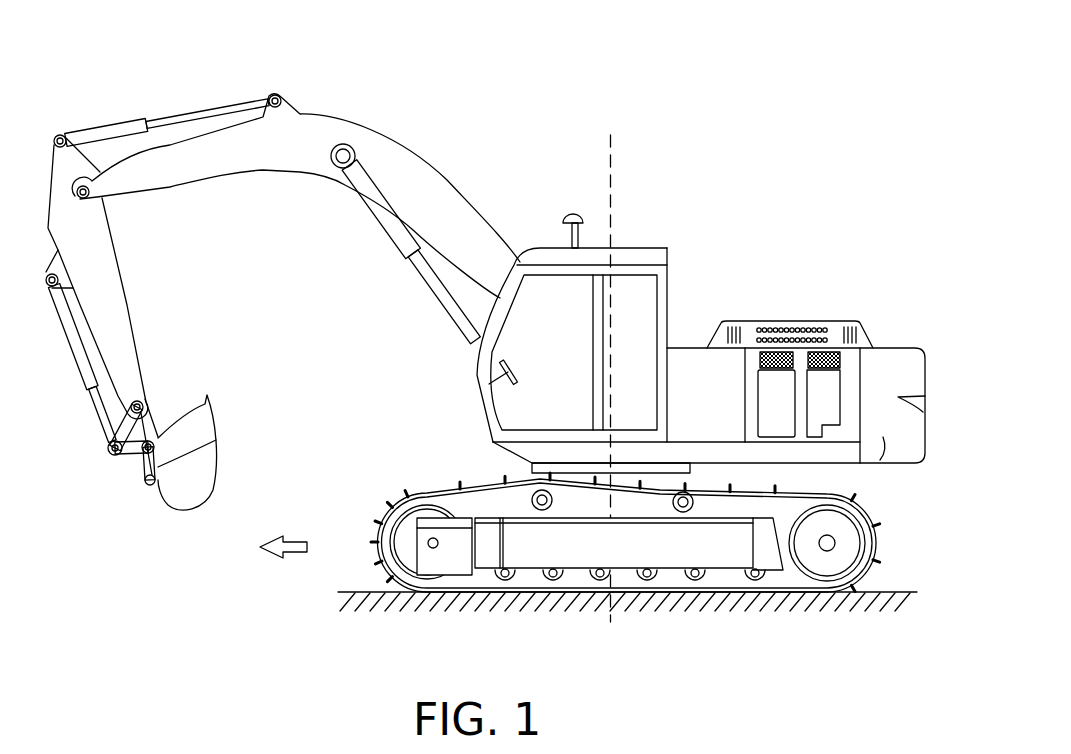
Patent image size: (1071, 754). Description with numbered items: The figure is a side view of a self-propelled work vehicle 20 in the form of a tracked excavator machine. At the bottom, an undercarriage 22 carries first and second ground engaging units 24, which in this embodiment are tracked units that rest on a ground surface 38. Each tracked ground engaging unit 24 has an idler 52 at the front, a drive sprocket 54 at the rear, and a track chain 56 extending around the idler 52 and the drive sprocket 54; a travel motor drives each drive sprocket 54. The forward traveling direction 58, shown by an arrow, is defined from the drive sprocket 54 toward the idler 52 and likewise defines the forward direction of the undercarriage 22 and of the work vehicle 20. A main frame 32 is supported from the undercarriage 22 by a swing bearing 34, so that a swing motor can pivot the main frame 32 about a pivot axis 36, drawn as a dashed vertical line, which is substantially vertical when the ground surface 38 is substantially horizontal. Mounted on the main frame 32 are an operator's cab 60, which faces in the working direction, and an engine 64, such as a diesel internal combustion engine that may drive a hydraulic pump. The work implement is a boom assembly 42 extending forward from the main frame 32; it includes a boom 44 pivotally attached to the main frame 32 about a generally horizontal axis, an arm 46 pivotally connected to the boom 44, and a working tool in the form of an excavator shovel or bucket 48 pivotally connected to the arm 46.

The self-propelled work vehicle 20 is at (508, 336).
The undercarriage 22 is at (665, 557).
The ground engaging units 24 is at (890, 553).
The main frame 32 is at (720, 352).
The swing bearing 34 is at (530, 473).
The pivot axis 36 is at (612, 153).
The ground surface 38 is at (887, 592).
The boom assembly 42 is at (283, 327).
The boom 44 is at (337, 177).
The arm 46 is at (105, 282).
The excavator shovel (bucket) 48 is at (192, 505).
The idler 52 is at (408, 535).
The drive sprocket 54 is at (797, 570).
The track chain 56 is at (525, 587).
The forward traveling direction 58 is at (290, 537).
The operator's cab 60 is at (638, 260).
The engine 64 is at (863, 330).